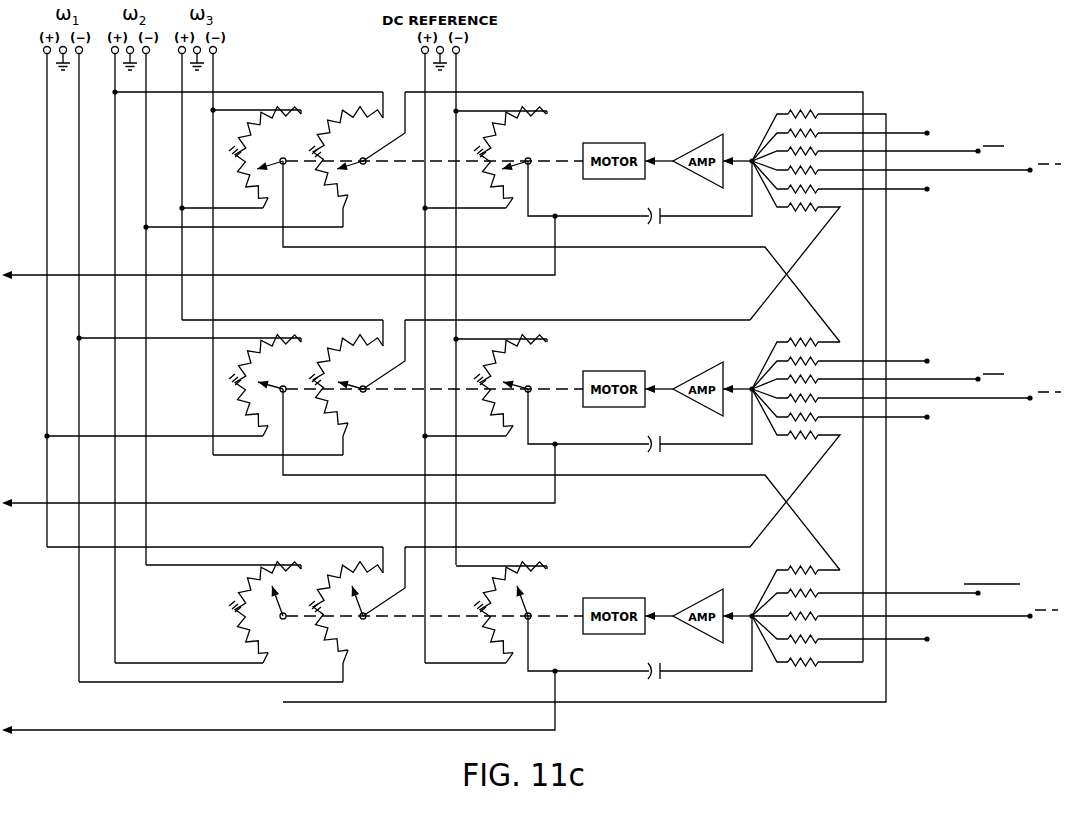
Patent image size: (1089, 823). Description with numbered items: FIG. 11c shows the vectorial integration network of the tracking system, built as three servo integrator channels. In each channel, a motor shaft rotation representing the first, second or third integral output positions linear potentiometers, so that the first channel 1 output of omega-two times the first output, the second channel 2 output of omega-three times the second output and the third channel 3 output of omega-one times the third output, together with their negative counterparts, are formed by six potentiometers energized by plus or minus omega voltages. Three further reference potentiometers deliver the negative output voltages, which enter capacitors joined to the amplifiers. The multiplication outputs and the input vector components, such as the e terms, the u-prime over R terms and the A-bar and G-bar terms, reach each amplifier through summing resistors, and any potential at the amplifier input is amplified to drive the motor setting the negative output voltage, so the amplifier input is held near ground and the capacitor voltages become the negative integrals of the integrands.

The first channel servo loop (V1) 1 is at (534, 385).
The second channel servo loop (V2) 2 is at (534, 433).
The third channel servo loop (V3) 3 is at (532, 629).